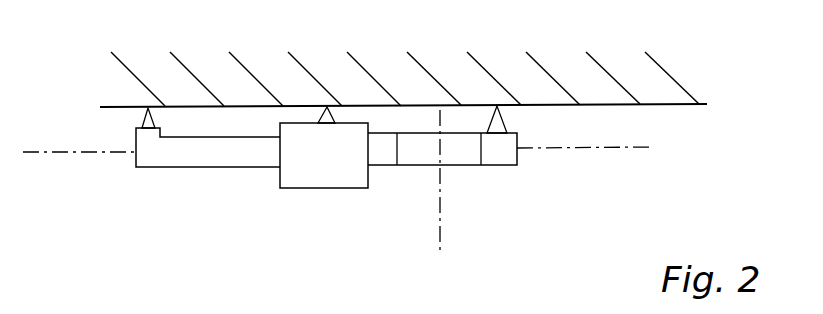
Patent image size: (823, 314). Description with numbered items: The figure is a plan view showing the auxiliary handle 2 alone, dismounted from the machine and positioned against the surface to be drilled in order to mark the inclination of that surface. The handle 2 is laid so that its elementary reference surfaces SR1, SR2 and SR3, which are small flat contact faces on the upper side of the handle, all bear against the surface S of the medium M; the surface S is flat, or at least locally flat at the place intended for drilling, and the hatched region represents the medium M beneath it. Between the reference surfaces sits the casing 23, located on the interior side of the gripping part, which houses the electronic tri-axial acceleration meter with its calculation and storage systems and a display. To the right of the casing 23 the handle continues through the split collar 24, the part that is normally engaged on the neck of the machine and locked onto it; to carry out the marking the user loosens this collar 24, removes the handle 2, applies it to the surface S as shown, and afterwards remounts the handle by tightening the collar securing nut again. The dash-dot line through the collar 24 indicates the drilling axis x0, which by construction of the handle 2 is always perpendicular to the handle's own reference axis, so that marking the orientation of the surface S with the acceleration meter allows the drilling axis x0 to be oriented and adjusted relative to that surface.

The auxiliary handle 2 is at (205, 194).
The casing 23 is at (339, 167).
The split collar 24 is at (457, 152).
The surface S is at (246, 110).
The first elementary reference surface SR1 is at (141, 126).
The second elementary reference surface SR2 is at (333, 118).
The third elementary reference surface SR3 is at (507, 117).
The medium M is at (405, 63).
The drilling axis x0 is at (455, 189).